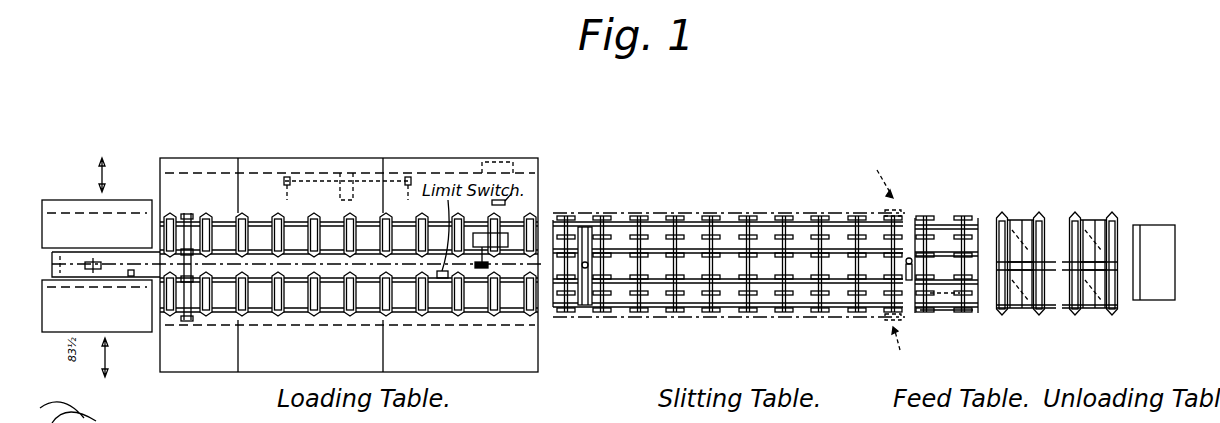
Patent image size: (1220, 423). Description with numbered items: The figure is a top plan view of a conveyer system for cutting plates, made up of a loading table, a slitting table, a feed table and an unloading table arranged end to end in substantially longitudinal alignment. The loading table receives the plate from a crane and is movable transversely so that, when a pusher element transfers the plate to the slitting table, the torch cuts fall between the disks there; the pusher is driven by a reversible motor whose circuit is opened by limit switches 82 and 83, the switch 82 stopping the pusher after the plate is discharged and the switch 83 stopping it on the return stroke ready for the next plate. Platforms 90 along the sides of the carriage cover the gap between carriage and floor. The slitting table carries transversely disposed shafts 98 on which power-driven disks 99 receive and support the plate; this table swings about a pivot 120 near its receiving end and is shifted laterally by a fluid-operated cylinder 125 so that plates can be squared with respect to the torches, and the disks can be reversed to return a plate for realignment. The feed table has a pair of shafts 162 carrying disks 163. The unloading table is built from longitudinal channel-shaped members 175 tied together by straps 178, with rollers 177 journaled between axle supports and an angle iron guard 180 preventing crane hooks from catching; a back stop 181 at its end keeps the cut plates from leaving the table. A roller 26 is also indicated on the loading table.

The loading table roller 26 is at (250, 222).
The limit switch 82 is at (443, 279).
The limit switch 83 is at (131, 270).
The platforms 90 is at (82, 195).
The shafts 98 is at (733, 225).
The disks 99 is at (812, 215).
The pivot 120 is at (583, 307).
The fluid-operated cylinder 125 is at (909, 282).
The shafts 162 is at (946, 265).
The disks 163 is at (962, 220).
The channel-shaped members 175 is at (1023, 220).
The rollers 177 is at (1037, 301).
The straps 178 is at (1100, 220).
The angle iron guard 180 is at (1112, 313).
The back stop 181 is at (1148, 240).